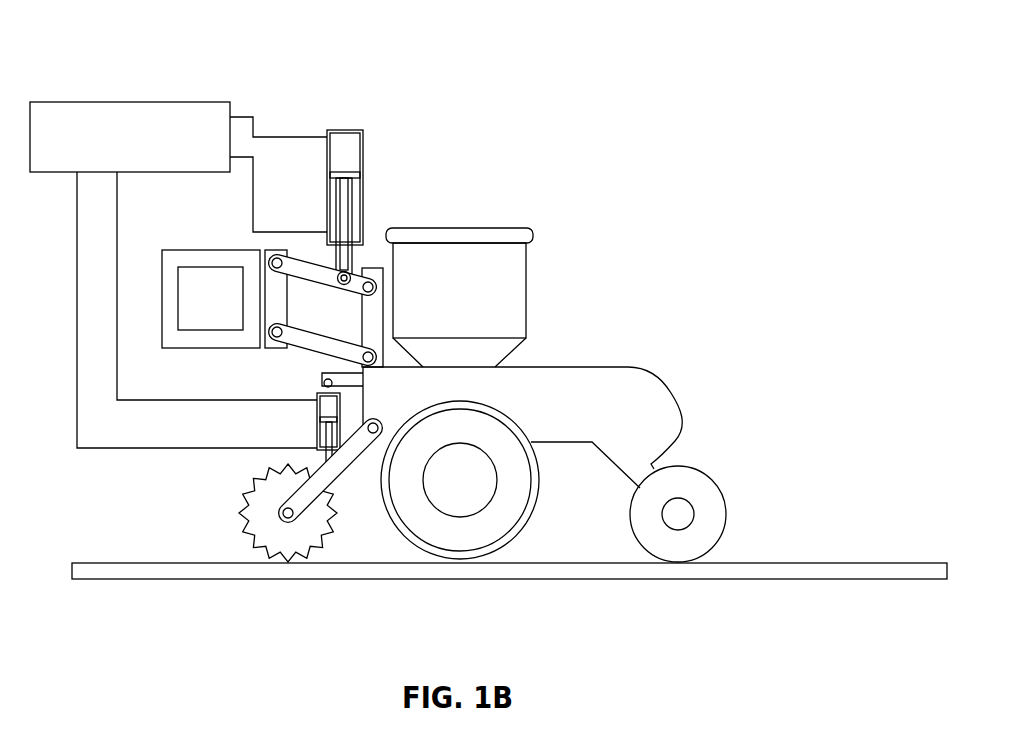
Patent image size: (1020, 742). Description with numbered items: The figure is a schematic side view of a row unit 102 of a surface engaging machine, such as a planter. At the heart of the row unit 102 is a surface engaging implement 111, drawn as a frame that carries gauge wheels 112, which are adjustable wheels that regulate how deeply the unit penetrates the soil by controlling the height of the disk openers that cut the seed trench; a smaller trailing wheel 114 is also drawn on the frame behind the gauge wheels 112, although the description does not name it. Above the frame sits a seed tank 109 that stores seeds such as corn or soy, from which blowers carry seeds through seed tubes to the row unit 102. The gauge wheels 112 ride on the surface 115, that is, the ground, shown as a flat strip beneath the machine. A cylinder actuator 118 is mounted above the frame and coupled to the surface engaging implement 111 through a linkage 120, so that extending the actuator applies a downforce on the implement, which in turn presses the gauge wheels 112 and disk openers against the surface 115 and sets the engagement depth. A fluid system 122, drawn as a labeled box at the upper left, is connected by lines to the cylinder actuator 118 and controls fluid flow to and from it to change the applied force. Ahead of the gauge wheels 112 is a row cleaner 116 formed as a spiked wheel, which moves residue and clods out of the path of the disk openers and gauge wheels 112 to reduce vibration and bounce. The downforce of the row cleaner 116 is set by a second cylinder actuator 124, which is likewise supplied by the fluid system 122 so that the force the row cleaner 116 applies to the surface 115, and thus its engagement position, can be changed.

The row unit 102 is at (211, 50).
The seed tank 109 is at (527, 293).
The surface engaging implement 111 is at (684, 400).
The gauge wheels 112 is at (527, 535).
The wheel 114 is at (724, 552).
The surface 115 is at (885, 558).
The row cleaner 116 is at (238, 497).
The cylinder actuator 118 is at (370, 182).
The linkage 120 is at (307, 356).
The fluid system 122 is at (131, 102).
The cylinder actuator 124 is at (311, 419).